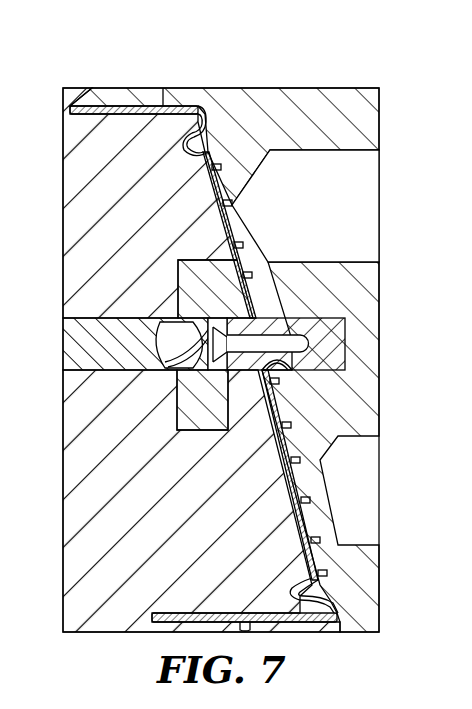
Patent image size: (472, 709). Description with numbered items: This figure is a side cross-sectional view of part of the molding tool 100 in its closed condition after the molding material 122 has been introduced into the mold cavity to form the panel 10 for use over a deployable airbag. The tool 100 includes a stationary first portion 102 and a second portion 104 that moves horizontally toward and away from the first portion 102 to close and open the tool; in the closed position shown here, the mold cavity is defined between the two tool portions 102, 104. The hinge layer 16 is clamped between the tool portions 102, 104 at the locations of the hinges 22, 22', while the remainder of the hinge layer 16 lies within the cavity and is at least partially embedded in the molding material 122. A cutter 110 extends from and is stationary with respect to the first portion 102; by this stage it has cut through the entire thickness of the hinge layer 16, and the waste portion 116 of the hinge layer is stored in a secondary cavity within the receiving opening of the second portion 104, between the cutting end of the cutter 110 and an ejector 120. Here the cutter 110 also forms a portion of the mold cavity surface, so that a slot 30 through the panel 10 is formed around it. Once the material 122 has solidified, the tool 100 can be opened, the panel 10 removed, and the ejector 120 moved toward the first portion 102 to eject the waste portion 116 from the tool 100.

The molding tool 100 is at (80, 80).
The panel 10 is at (128, 92).
The second portion 104 is at (150, 88).
The first portion 102 is at (344, 100).
The hinge layer 16 is at (187, 141).
The molding material 122 is at (223, 167).
The hinge 22 is at (174, 162).
The waste portion 116 is at (190, 318).
The ejector 120 is at (78, 320).
The cutter 110 is at (288, 330).
The slot 30 is at (288, 382).
The hinge 22' is at (285, 590).